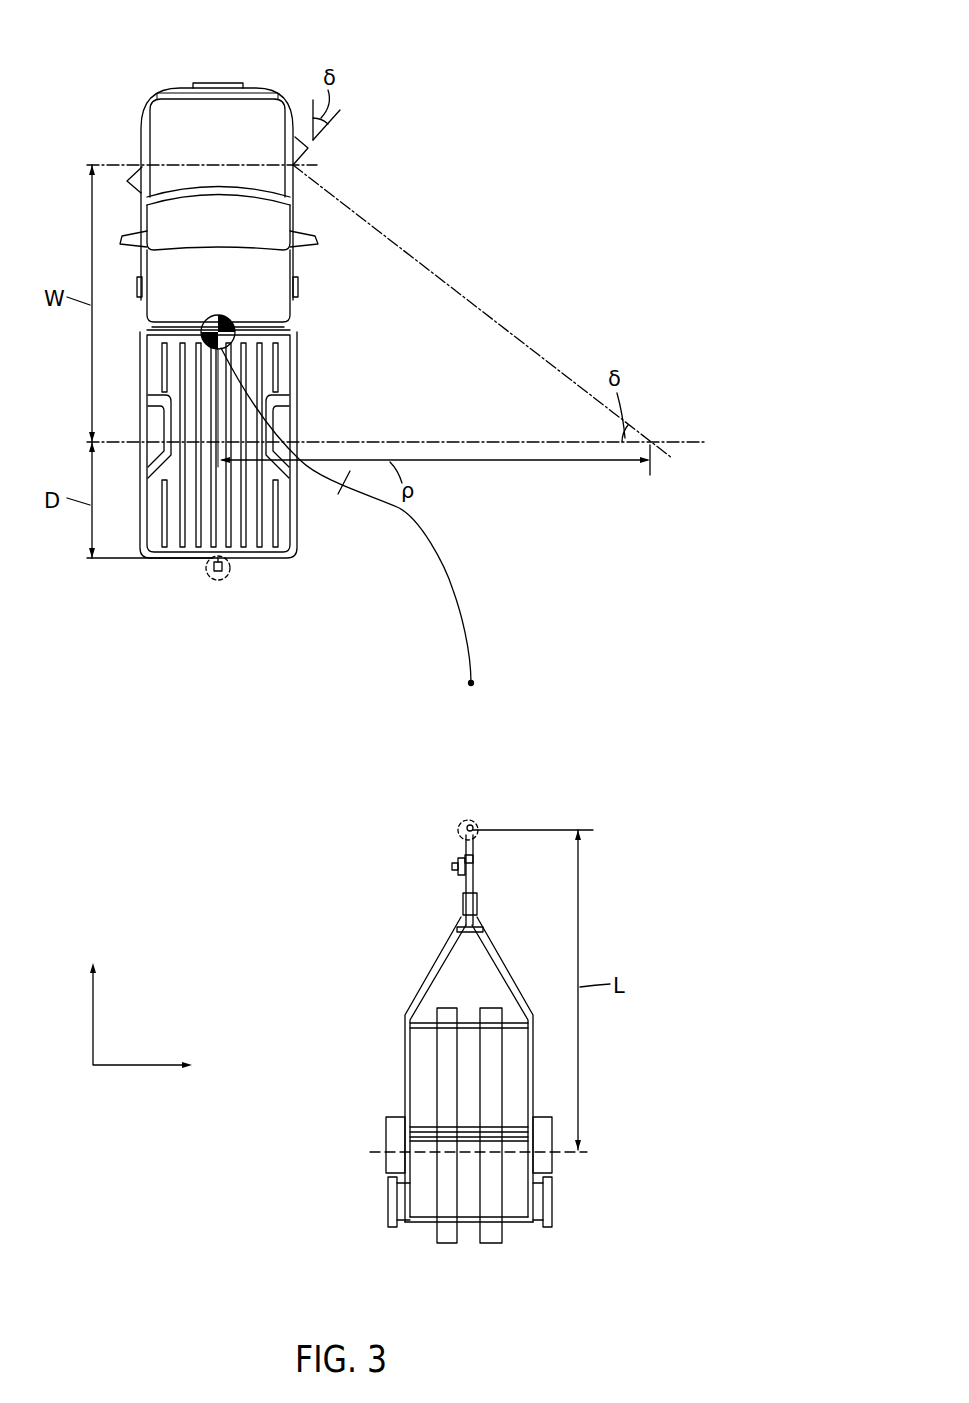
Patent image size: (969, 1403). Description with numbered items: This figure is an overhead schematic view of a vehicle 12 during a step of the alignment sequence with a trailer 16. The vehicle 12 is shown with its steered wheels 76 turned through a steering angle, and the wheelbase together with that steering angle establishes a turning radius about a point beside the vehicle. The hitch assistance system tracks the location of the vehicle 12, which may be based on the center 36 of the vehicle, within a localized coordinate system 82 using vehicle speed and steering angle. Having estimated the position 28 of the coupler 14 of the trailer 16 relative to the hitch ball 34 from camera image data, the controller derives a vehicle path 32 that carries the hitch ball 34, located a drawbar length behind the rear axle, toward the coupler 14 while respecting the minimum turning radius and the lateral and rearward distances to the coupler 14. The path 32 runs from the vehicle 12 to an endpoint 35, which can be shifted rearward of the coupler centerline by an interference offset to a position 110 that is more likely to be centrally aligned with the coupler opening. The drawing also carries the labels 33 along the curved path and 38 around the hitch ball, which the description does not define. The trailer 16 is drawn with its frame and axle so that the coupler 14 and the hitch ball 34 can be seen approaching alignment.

The vehicle 12 is at (119, 89).
The coupler 14 is at (446, 1007).
The trailer 16 is at (400, 1065).
The position of the coupler 28 is at (480, 823).
The vehicle path 32 is at (609, 50).
The vehicle path 33 is at (321, 486).
The hitch ball 34 is at (212, 569).
The endpoint of the path 35 is at (475, 680).
The center of the vehicle 36 is at (206, 346).
The hitch ball 38 is at (228, 578).
The steered wheels 76 is at (127, 181).
The coordinate system 82 is at (147, 1093).
The position 110 is at (467, 825).